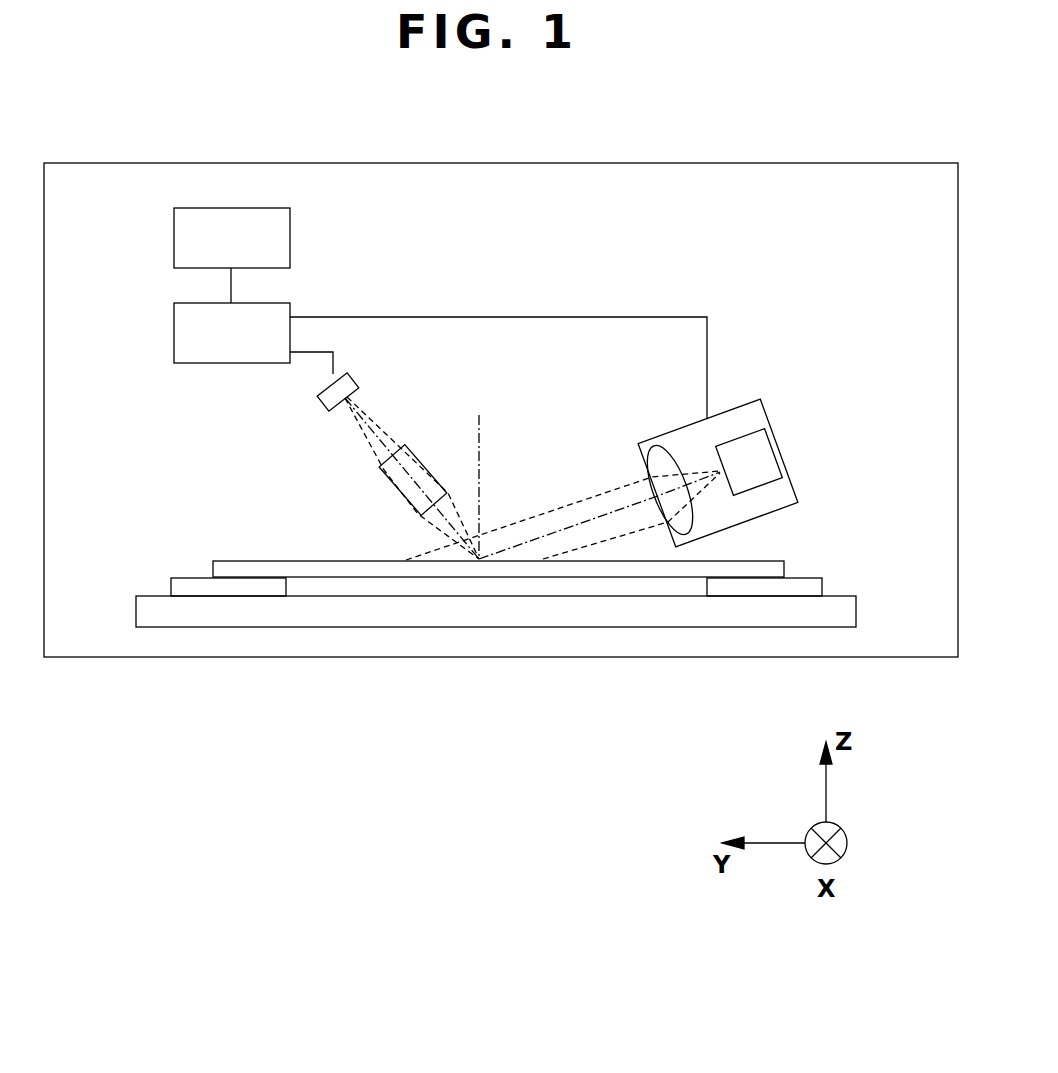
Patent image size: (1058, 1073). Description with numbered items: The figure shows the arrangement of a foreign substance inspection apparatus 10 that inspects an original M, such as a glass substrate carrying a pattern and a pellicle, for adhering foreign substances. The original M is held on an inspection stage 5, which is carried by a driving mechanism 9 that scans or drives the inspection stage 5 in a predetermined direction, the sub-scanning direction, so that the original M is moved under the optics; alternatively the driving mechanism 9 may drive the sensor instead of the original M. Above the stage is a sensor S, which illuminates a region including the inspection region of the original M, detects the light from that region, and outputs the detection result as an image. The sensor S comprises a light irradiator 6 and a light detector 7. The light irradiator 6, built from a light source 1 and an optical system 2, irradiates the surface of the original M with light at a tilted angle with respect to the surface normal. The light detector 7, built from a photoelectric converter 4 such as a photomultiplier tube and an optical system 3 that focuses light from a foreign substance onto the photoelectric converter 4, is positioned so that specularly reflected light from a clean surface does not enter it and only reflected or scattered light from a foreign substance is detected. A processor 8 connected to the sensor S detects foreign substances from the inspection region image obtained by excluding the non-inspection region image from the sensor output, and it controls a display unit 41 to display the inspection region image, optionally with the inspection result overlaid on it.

The foreign substance inspection apparatus 10 is at (829, 162).
The display unit 41 is at (185, 240).
The processor 8 is at (185, 334).
The sensor S is at (130, 420).
The light detector 7 is at (263, 418).
The photoelectric converter 4 is at (333, 394).
The optical system 3 is at (402, 485).
The light irradiator 6 is at (640, 479).
The light source 1 is at (770, 468).
The optical system 2 is at (683, 518).
The original M is at (272, 570).
The inspection stage 5 is at (190, 585).
The driving mechanism 9 is at (147, 600).